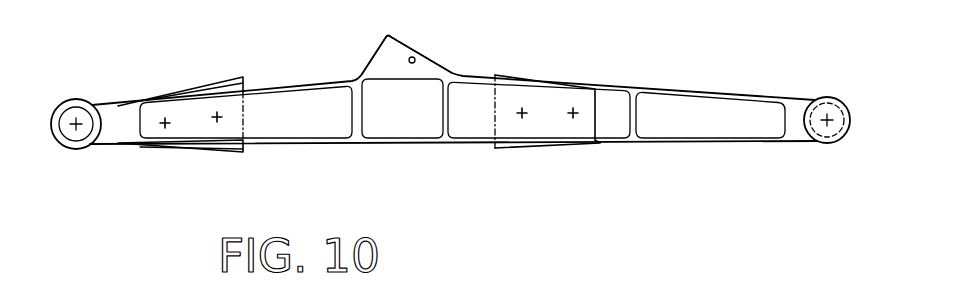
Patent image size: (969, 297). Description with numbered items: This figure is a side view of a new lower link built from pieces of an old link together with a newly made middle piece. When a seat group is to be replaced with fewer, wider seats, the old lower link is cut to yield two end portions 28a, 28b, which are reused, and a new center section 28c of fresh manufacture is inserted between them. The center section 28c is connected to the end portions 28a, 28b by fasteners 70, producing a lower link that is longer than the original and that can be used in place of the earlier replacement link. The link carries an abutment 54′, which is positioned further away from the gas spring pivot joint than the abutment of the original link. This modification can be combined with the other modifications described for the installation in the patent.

The end portion 28a is at (168, 153).
The end portion 28b is at (706, 144).
The center section 28c is at (407, 140).
The abutment 54′ is at (399, 48).
The fasteners 70 is at (217, 115).